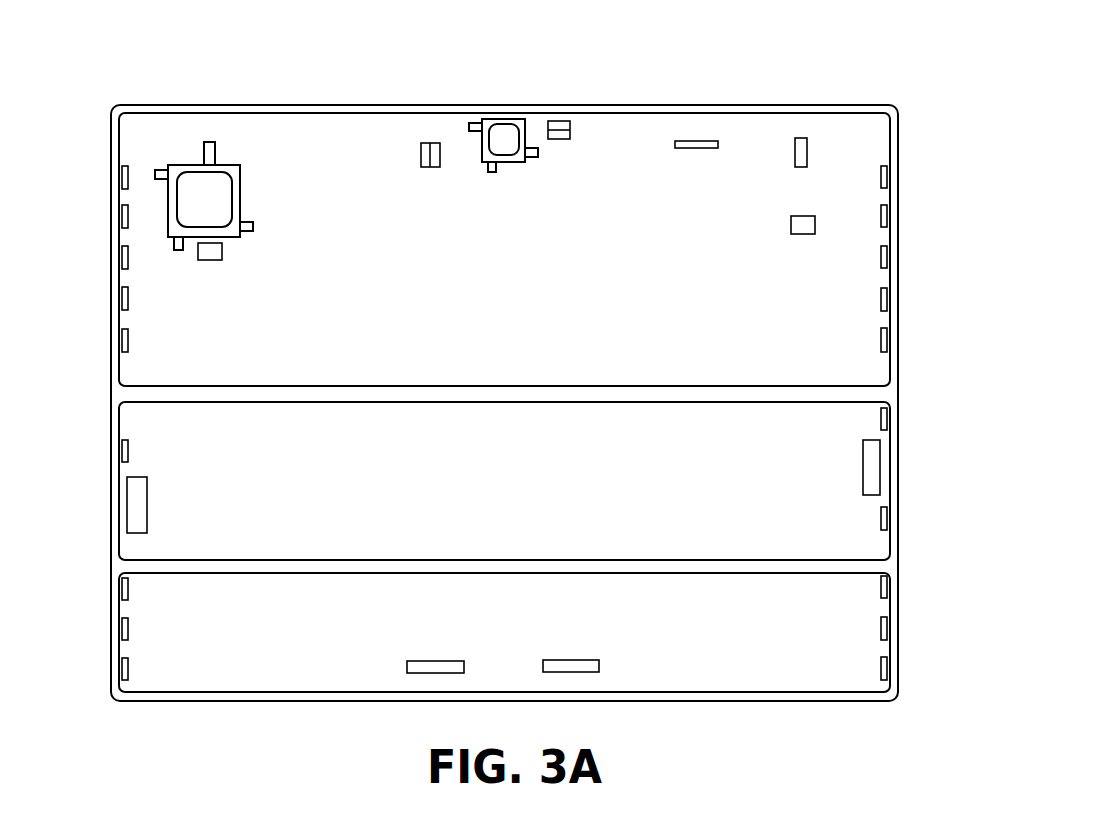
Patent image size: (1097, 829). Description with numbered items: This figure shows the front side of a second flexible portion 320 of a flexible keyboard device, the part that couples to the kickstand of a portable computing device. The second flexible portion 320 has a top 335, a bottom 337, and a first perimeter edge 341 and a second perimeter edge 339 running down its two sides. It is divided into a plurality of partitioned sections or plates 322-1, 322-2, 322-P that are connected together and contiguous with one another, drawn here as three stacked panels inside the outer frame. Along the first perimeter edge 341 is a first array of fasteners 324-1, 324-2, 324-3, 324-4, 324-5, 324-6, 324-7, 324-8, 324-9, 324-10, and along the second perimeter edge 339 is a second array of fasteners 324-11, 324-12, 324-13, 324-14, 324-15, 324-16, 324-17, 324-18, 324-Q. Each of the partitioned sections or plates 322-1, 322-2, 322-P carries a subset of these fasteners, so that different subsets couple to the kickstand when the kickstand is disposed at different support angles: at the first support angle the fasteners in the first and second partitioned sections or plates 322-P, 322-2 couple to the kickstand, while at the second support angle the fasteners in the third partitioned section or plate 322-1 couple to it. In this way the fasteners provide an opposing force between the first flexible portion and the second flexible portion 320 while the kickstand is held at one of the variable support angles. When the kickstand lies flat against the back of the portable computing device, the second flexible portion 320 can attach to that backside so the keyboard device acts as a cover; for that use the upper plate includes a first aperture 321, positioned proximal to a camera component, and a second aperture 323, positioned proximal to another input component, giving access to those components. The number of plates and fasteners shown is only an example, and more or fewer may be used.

The second flexible portion 320 is at (853, 63).
The top 335 is at (198, 113).
The bottom 337 is at (203, 692).
The first aperture 321 is at (506, 124).
The second aperture 323 is at (242, 177).
The third partitioned section or plate 322-1 is at (898, 114).
The second partitioned section or plate 322-2 is at (893, 403).
The first partitioned section or plate 322-P is at (893, 572).
The second perimeter edge 339 is at (86, 410).
The first perimeter edge 341 is at (915, 448).
The fastener 324-1 is at (884, 180).
The fastener 324-2 is at (884, 218).
The fastener 324-3 is at (884, 262).
The fastener 324-4 is at (884, 300).
The fastener 324-5 is at (884, 342).
The fastener 324-6 is at (884, 420).
The fastener 324-7 is at (884, 520).
The fastener 324-8 is at (884, 590).
The fastener 324-9 is at (884, 628).
The fastener 324-10 is at (884, 666).
The fastener 324-11 is at (125, 180).
The fastener 324-12 is at (125, 219).
The fastener 324-13 is at (125, 259).
The fastener 324-14 is at (125, 300).
The fastener 324-15 is at (125, 341).
The fastener 324-16 is at (125, 450).
The fastener 324-17 is at (125, 585).
The fastener 324-18 is at (125, 628).
The fastener 324-Q is at (125, 665).